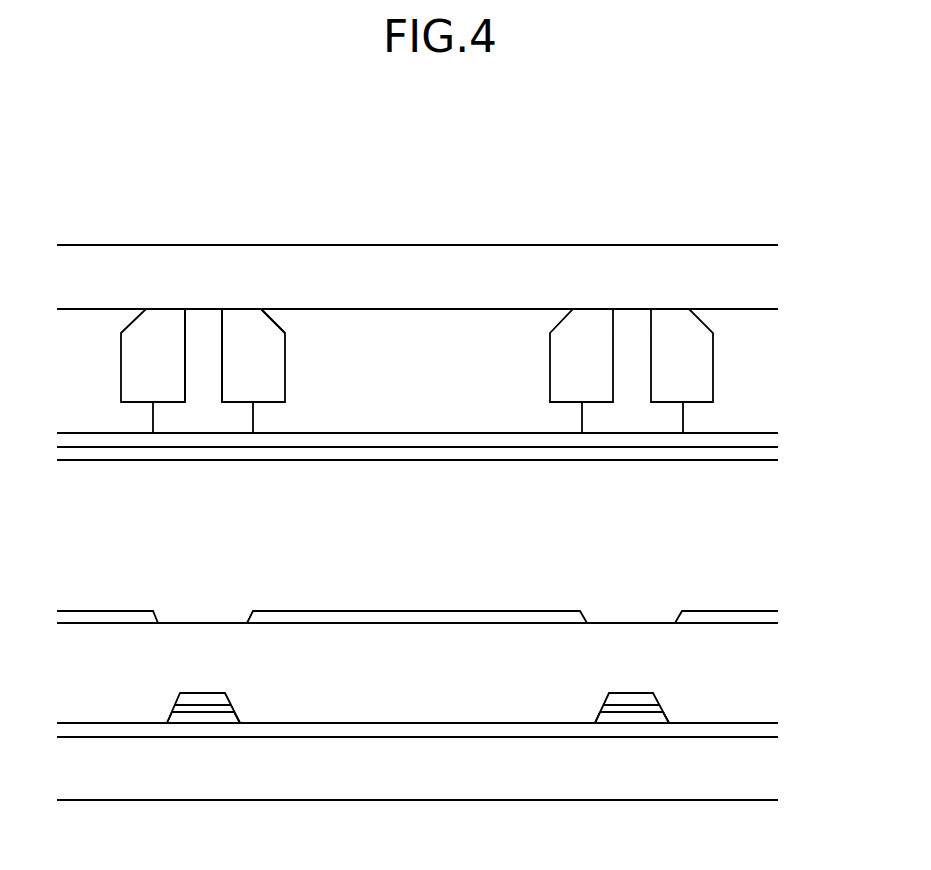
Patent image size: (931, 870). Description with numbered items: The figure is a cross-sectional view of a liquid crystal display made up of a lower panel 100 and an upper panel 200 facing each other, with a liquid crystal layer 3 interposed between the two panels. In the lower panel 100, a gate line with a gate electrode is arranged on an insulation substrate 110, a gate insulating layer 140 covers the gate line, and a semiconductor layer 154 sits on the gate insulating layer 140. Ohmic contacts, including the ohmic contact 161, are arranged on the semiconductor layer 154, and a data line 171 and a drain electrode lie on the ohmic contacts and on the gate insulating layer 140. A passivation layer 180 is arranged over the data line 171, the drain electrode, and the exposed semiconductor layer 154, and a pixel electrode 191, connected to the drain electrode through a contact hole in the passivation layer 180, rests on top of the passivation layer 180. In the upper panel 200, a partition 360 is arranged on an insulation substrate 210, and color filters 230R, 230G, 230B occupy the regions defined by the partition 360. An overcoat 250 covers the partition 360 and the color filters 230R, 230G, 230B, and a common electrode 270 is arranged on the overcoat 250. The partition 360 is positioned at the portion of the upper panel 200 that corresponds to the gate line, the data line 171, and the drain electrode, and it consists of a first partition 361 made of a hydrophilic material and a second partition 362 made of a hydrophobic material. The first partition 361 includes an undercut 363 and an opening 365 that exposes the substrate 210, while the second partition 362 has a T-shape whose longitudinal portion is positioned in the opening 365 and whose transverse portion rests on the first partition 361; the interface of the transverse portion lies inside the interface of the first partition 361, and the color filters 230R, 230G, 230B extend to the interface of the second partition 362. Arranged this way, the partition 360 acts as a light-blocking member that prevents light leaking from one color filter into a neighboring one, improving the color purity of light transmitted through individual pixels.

The insulation substrate 110 is at (465, 780).
The gate insulating layer 140 is at (367, 730).
The semiconductor layer 154 is at (223, 718).
The ohmic contact 161 is at (205, 710).
The data line 171 is at (188, 702).
The passivation layer 180 is at (630, 645).
The pixel electrode 191 is at (98, 617).
The lower panel 100 is at (782, 800).
The liquid crystal layer 3 is at (782, 463).
The upper panel 200 is at (782, 245).
The insulation substrate 210 is at (457, 265).
The red color filter 230R is at (112, 385).
The green color filter 230G is at (398, 385).
The blue color filter 230B is at (722, 385).
The overcoat 250 is at (480, 440).
The common electrode 270 is at (407, 452).
The partition 360 is at (207, 178).
The first partition 361 is at (243, 333).
The second partition 362 is at (213, 333).
The undercut 363 is at (278, 322).
The opening 365 is at (186, 340).